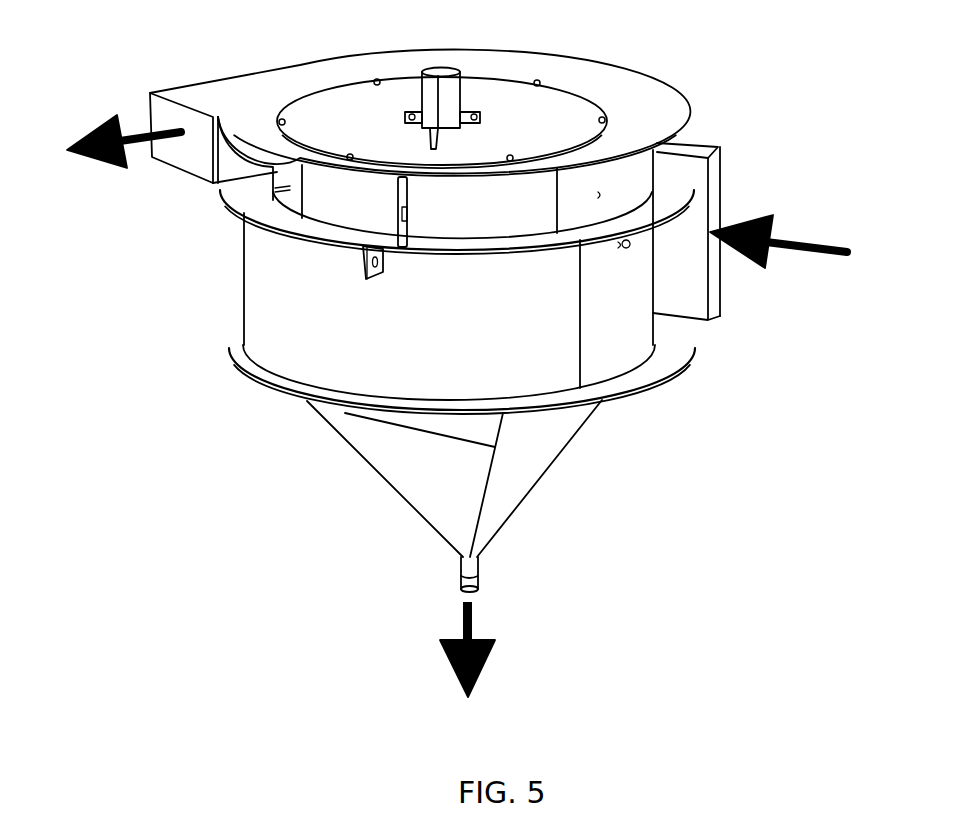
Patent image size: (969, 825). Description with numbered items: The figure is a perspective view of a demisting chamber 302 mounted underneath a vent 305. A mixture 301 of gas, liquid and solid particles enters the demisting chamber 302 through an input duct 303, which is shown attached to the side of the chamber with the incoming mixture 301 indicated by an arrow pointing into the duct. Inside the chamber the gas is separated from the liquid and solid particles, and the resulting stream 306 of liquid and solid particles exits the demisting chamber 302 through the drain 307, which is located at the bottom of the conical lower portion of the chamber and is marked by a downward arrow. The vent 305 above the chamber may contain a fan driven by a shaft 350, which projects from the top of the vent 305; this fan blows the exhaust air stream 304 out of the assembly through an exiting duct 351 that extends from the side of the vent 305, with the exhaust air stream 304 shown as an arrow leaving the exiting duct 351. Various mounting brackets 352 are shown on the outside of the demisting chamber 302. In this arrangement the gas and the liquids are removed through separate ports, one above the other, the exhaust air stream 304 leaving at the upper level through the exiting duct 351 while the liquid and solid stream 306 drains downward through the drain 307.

The mixture 301 is at (810, 238).
The demisting chamber 302 is at (255, 337).
The input duct 303 is at (712, 148).
The exhaust air stream 304 is at (112, 127).
The vent 305 is at (652, 77).
The stream 306 is at (480, 638).
The drain 307 is at (477, 580).
The shaft 350 is at (449, 72).
The exiting duct 351 is at (180, 97).
The mounting brackets 352 is at (382, 223).